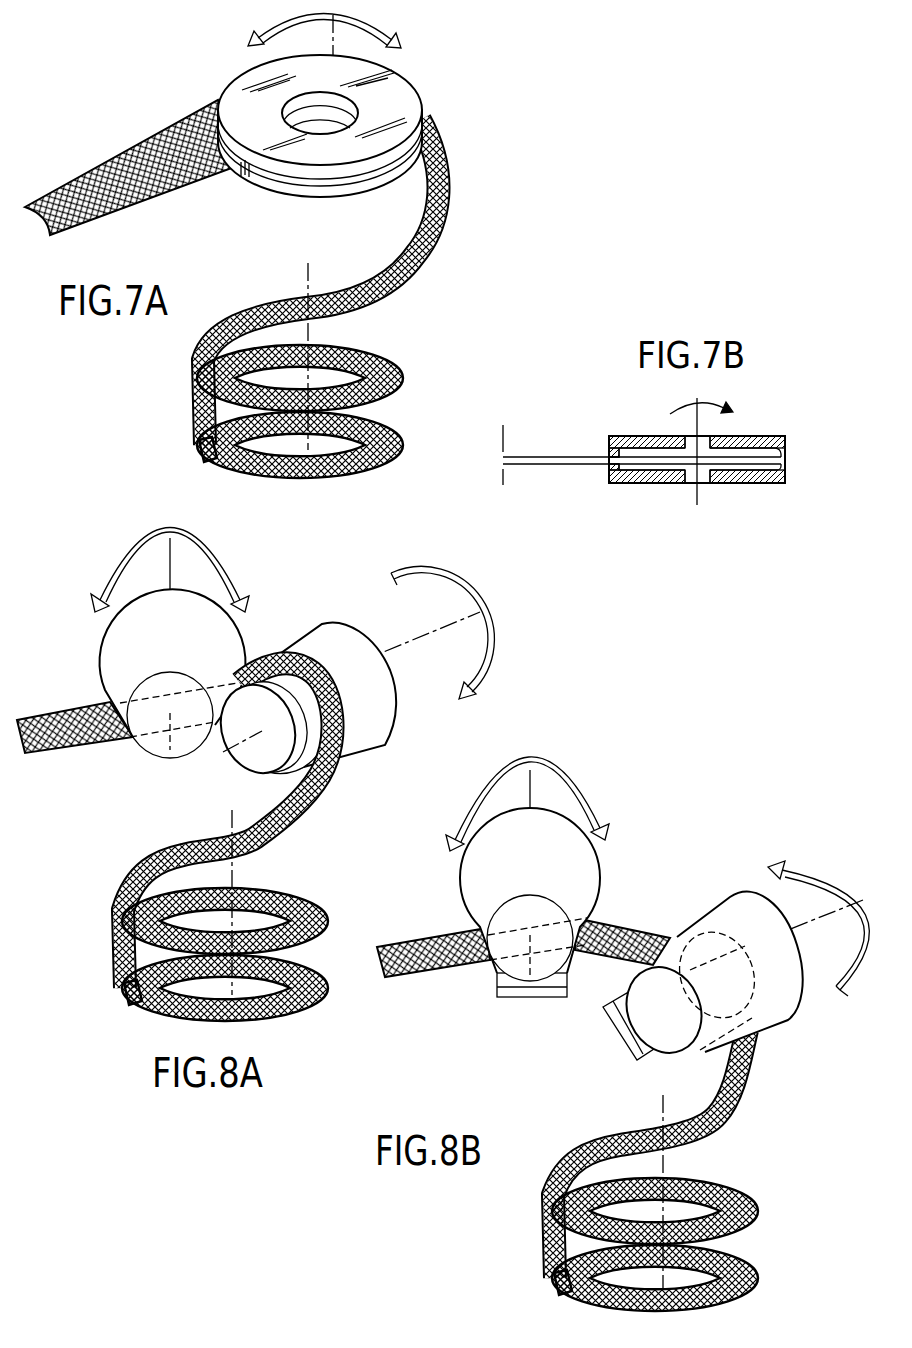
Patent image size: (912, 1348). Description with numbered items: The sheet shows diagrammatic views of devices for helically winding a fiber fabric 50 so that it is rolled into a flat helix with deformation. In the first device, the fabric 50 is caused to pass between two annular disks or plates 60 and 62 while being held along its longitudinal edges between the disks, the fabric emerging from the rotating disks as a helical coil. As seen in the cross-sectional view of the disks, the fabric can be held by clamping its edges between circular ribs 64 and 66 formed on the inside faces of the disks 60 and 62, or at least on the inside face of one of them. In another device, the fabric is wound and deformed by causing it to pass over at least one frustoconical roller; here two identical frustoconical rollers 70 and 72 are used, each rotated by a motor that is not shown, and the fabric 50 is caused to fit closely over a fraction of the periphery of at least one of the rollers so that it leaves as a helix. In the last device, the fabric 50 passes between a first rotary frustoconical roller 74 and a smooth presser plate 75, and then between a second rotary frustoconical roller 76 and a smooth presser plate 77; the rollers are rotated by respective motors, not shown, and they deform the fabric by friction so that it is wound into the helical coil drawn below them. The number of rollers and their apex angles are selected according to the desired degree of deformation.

In FIG. 7A, the fabric 50 is at (113, 158).
In FIG. 7B, the fabric 50 is at (560, 465).
In FIG. 8A, the fabric 50 is at (27, 717).
In FIG. 8B, the fabric 50 is at (383, 947).
In FIG. 7A, the annular disk 60 is at (410, 97).
In FIG. 7B, the annular disk 60 is at (724, 460).
In FIG. 7B, the annular disk 62 is at (750, 436).
In FIG. 7B, the circular rib 64 is at (784, 453).
In FIG. 7B, the circular rib 66 is at (784, 466).
In FIG. 8A, the frustoconical roller 70 is at (150, 742).
In FIG. 8A, the frustoconical roller 72 is at (250, 760).
In FIG. 8B, the first rotary frustoconical roller 74 is at (521, 927).
In FIG. 8B, the smooth presser plate 75 is at (508, 997).
In FIG. 8B, the second rotary frustoconical roller 76 is at (692, 991).
In FIG. 8B, the smooth presser plate 77 is at (618, 1030).